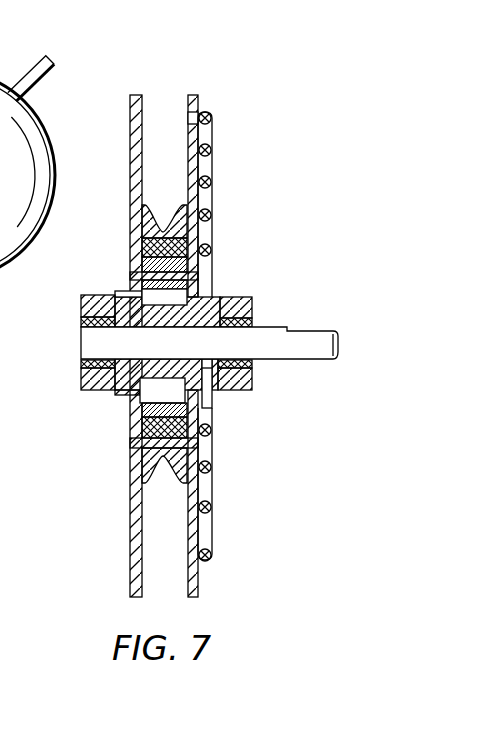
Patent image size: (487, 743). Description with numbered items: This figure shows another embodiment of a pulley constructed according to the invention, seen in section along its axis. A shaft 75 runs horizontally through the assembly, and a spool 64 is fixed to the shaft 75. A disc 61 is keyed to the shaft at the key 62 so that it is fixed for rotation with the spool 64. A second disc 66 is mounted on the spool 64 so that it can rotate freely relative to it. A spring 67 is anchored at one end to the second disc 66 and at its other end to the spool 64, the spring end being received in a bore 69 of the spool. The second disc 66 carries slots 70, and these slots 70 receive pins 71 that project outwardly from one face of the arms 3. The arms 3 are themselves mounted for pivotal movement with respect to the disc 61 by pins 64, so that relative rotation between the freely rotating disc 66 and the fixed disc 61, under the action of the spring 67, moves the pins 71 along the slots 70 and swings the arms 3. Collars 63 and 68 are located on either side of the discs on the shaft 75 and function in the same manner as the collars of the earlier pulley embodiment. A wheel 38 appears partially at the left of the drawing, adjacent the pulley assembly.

The arms 3 is at (176, 212).
The wheel 38 is at (27, 167).
The disc 61 is at (136, 95).
The key 62 is at (120, 290).
The collar 63 is at (80, 377).
The spool 64 is at (131, 272).
The second disc 66 is at (196, 95).
The spring 67 is at (212, 118).
The collar 68 is at (252, 303).
The bore 69 is at (227, 387).
The slots 70 is at (195, 532).
The pins 71 is at (140, 432).
The shaft 75 is at (302, 330).